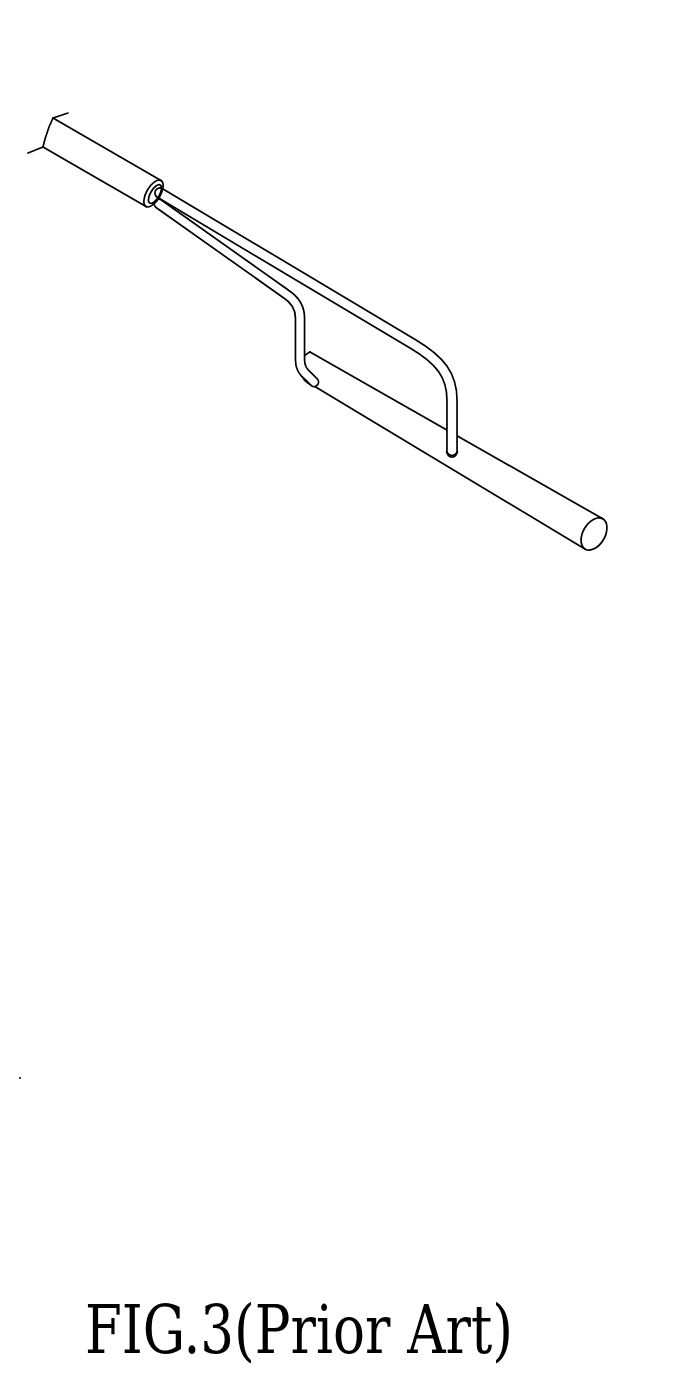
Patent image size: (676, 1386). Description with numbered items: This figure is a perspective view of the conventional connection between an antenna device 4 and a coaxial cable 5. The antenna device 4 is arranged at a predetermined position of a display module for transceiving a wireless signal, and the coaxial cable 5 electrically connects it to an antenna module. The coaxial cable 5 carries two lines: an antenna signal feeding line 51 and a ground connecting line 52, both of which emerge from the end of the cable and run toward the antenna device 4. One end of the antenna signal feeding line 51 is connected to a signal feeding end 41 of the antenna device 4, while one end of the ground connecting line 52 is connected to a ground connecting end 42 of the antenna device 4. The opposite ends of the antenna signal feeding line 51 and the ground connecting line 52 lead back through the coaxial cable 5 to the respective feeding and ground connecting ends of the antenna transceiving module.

The antenna device 4 is at (553, 502).
The signal feeding end 41 is at (456, 457).
The ground connecting end 42 is at (320, 392).
The coaxial cable 5 is at (105, 163).
The antenna signal feeding line 51 is at (335, 298).
The ground connecting line 52 is at (212, 246).